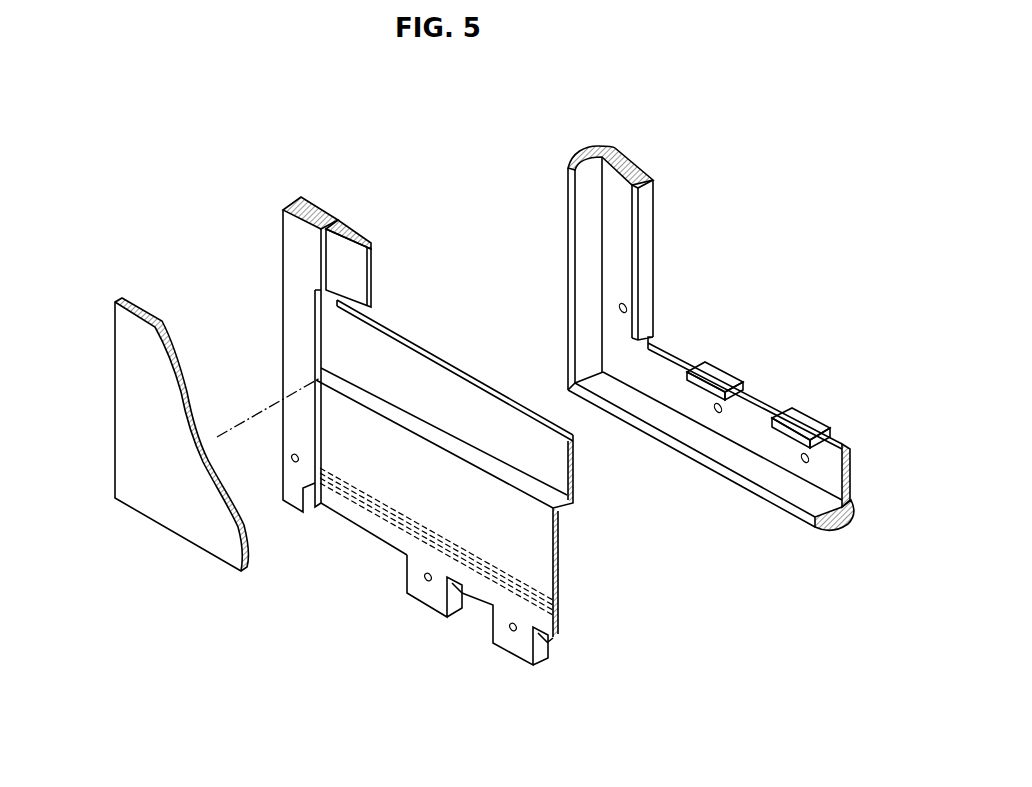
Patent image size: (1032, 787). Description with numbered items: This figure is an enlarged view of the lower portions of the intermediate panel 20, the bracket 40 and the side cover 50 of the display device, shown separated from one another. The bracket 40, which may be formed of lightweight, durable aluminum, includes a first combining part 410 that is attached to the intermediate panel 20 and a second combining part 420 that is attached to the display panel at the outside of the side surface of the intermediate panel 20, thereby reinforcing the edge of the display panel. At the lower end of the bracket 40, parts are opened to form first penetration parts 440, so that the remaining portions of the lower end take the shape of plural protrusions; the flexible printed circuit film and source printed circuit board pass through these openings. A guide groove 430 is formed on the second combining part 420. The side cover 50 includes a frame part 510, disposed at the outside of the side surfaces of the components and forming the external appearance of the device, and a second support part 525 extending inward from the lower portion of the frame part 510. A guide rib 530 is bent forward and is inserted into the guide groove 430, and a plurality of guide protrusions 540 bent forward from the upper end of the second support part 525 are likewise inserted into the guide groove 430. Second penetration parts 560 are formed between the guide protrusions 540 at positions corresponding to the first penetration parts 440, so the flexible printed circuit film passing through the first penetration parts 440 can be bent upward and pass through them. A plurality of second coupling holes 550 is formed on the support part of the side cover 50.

The intermediate panel 20 is at (103, 349).
The bracket 40 is at (412, 437).
The first combining part 410 is at (433, 372).
The second combining part 420 is at (543, 550).
The guide groove 430 is at (557, 613).
The first penetration parts 440 is at (477, 621).
The side cover 50 is at (703, 351).
The frame part 510 is at (838, 523).
The second support part 525 is at (856, 477).
The guide rib 530 is at (645, 232).
The guide protrusions 540 is at (715, 372).
The second coupling holes 550 is at (715, 413).
The second penetration parts 560 is at (747, 410).